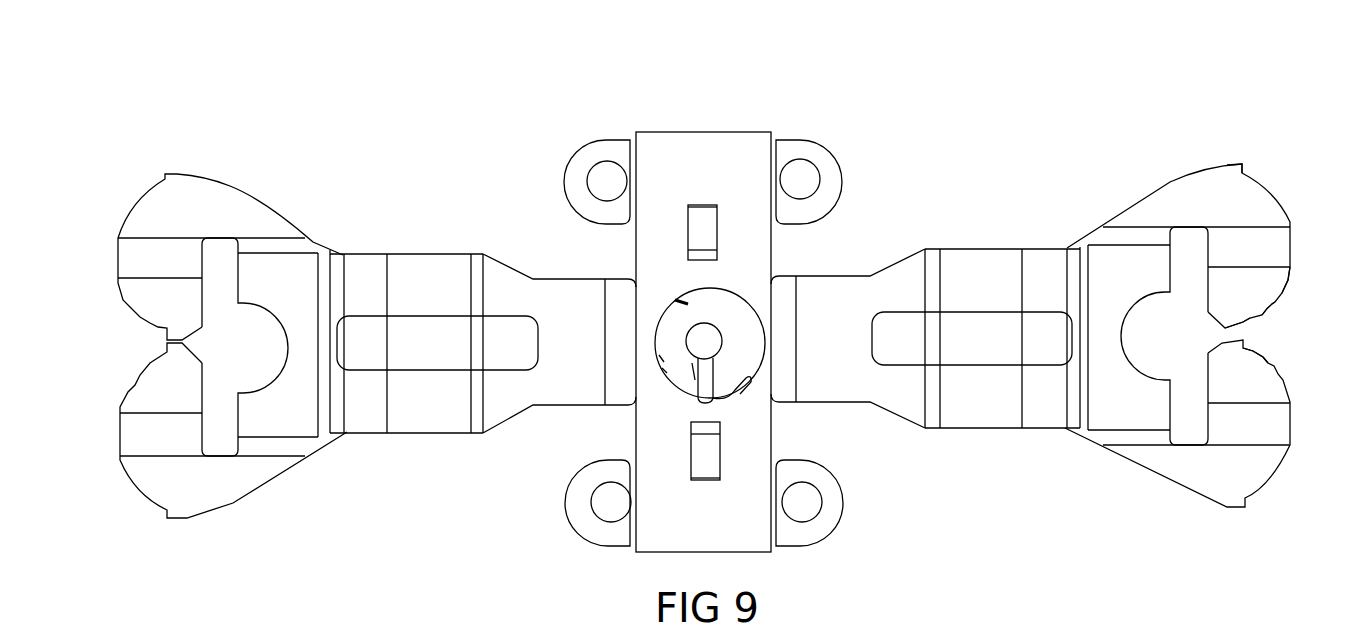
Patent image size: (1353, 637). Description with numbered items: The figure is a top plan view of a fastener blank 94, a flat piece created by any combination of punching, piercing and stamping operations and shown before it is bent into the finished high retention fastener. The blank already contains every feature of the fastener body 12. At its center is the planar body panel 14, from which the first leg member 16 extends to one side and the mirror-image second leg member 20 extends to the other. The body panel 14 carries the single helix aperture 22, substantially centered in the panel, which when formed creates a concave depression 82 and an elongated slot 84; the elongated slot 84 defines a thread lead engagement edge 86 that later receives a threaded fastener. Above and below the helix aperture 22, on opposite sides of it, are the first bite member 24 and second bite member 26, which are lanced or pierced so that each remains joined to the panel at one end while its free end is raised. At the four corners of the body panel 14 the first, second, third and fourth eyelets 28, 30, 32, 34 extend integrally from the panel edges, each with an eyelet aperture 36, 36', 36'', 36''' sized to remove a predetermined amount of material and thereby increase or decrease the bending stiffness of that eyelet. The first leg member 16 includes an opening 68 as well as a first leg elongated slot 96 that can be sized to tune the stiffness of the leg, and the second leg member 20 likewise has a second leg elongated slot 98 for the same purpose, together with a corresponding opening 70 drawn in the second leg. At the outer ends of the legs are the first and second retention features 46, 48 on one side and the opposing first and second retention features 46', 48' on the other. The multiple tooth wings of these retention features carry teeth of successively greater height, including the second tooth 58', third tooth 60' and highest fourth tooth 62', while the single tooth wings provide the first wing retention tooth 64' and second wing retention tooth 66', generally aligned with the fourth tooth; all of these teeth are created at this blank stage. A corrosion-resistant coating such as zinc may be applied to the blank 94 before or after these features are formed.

The fastener body 12 is at (1058, 242).
The planar body panel 14 is at (667, 533).
The first leg member 16 is at (588, 287).
The second leg member 20 is at (852, 287).
The single helix aperture 22 is at (703, 342).
The first bite member 24 is at (707, 462).
The second bite member 26 is at (703, 217).
The first eyelet 28 is at (584, 510).
The second eyelet 30 is at (846, 497).
The third eyelet 32 is at (582, 191).
The fourth eyelet 34 is at (843, 183).
The eyelet aperture 36 is at (582, 521).
The eyelet aperture 36' is at (836, 515).
The eyelet aperture 36'' is at (581, 157).
The eyelet aperture 36''' is at (833, 154).
The first retention feature 46 is at (219, 304).
The first retention feature 46' is at (1194, 297).
The second retention feature 48 is at (233, 457).
The second retention feature 48' is at (1195, 423).
The second tooth 58' is at (1312, 281).
The third tooth 60' is at (1297, 311).
The fourth tooth 62' is at (1269, 333).
The first wing retention tooth 64' is at (1287, 361).
The second wing retention tooth 66' is at (1264, 153).
The opening 68 is at (263, 312).
The pivot boss 70 is at (1140, 363).
The concave depression 82 is at (723, 317).
The elongated slot 84 is at (707, 397).
The thread lead engagement edge 86 is at (692, 381).
The fastener blank 94 is at (940, 107).
The first leg elongated slot 96 is at (432, 357).
The second leg elongated slot 98 is at (983, 348).